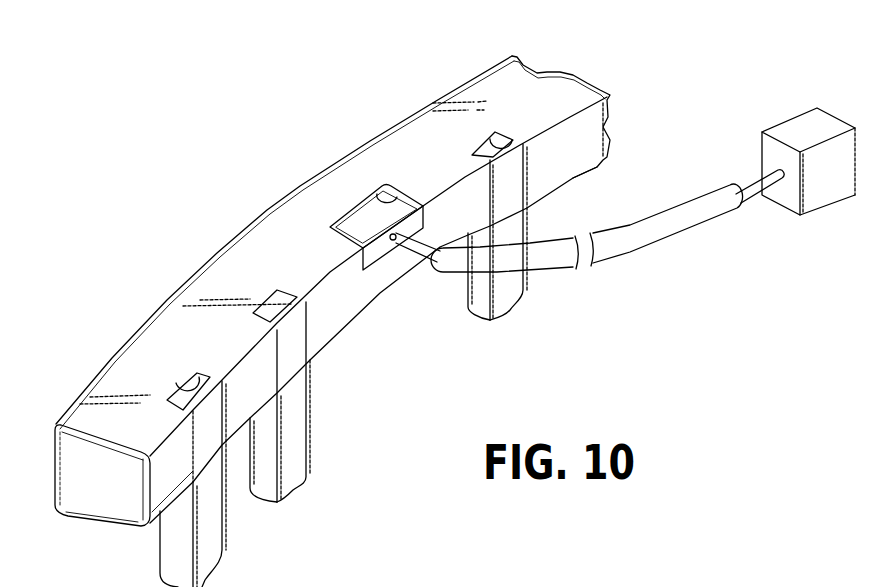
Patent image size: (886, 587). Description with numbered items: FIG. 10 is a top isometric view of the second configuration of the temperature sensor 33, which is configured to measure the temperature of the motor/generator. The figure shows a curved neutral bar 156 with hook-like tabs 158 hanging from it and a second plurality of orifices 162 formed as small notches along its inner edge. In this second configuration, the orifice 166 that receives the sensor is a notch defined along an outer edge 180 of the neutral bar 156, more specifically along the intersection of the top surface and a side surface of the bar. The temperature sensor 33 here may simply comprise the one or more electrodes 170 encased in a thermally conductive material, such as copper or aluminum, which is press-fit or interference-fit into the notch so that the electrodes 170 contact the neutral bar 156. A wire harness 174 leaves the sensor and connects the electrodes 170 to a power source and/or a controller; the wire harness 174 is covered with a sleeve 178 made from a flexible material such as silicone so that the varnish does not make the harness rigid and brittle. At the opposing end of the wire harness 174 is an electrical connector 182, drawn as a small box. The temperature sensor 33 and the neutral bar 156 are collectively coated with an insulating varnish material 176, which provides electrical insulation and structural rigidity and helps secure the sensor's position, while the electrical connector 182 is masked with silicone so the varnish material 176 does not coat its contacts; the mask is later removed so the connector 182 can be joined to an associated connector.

The neutral bar 156 is at (240, 237).
The insulating varnish material 176 is at (110, 352).
The outer edge 180 is at (337, 306).
The second plurality of orifices 162 is at (196, 372).
The hooks 158 is at (526, 291).
The orifice 166 is at (311, 168).
The temperature sensor 33 is at (311, 195).
The electrodes 170 is at (362, 211).
The wire harness 174 is at (422, 241).
The sleeve 178 is at (627, 248).
The electrical connector 182 is at (789, 118).